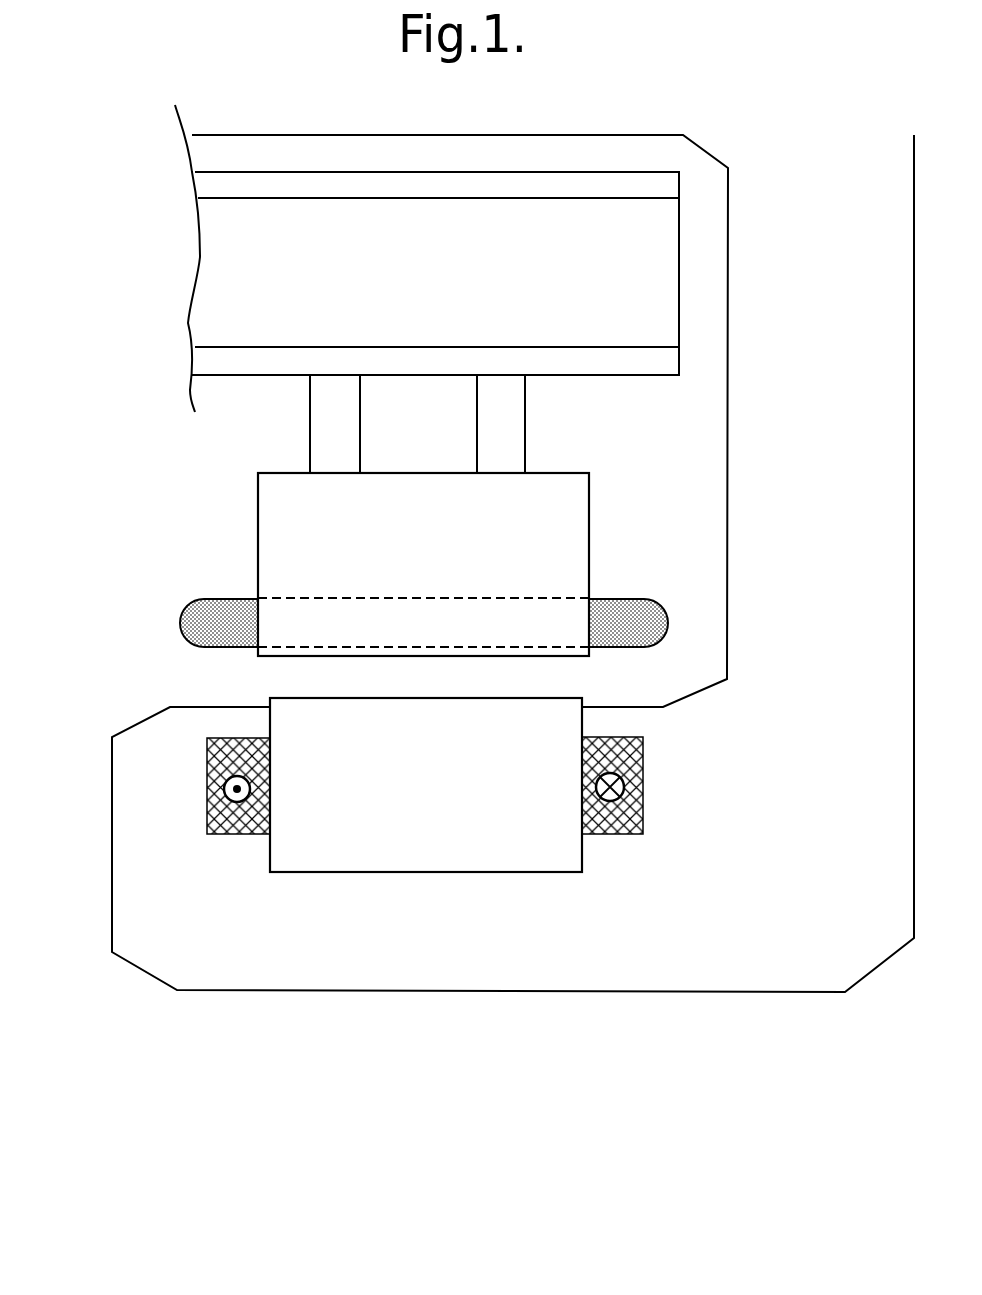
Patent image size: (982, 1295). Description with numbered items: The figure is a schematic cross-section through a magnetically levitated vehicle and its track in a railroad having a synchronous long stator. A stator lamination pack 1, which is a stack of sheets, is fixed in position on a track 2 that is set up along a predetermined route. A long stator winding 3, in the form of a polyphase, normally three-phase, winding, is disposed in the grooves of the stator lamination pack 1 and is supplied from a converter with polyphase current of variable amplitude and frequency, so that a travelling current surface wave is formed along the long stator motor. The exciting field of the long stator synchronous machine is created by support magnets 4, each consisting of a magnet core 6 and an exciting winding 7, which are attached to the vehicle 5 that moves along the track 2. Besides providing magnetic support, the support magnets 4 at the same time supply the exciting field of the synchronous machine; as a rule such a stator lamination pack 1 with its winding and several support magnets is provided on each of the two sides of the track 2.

The stator lamination pack 1 is at (283, 533).
The track 2 is at (257, 282).
The long stator winding 3 is at (197, 615).
The support magnet 4 is at (367, 866).
The vehicle 5 is at (703, 950).
The magnet core 6 is at (493, 818).
The exciting winding 7 is at (227, 834).